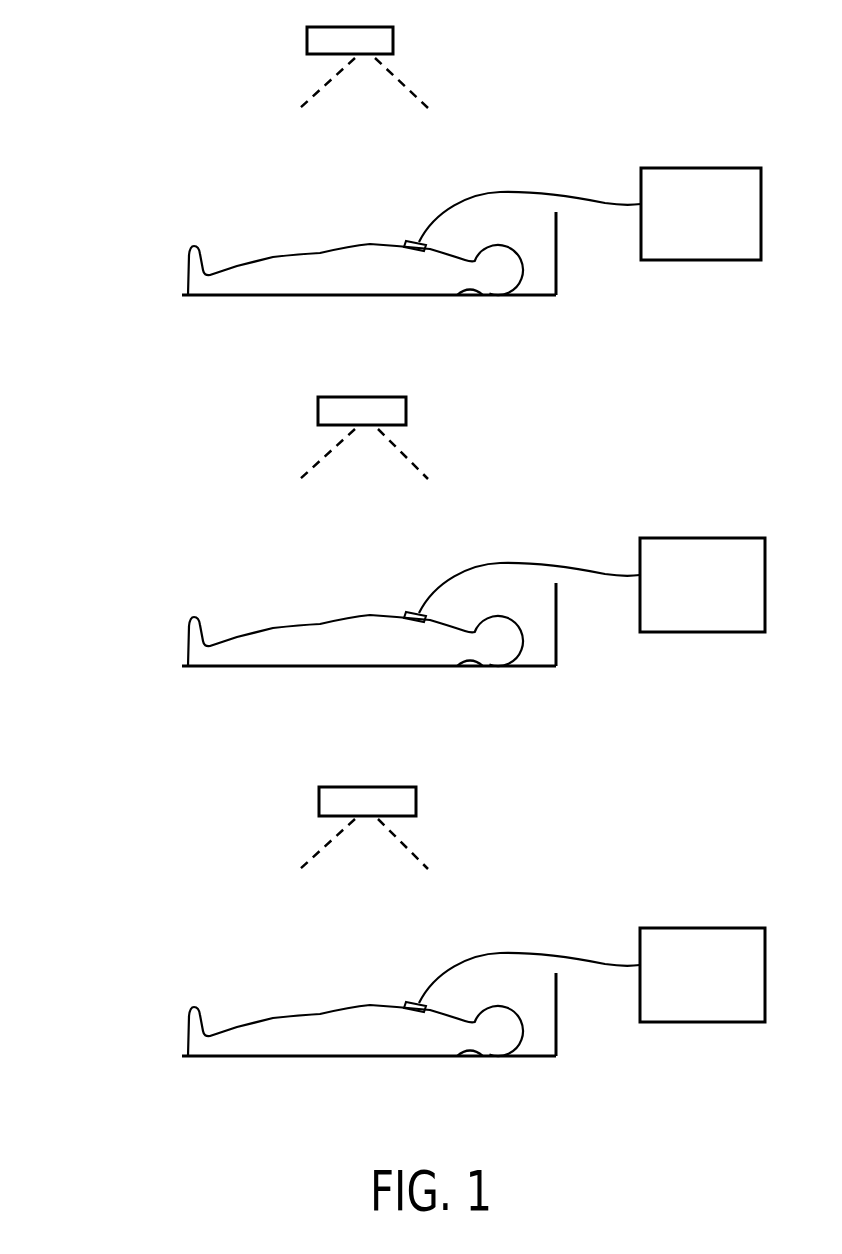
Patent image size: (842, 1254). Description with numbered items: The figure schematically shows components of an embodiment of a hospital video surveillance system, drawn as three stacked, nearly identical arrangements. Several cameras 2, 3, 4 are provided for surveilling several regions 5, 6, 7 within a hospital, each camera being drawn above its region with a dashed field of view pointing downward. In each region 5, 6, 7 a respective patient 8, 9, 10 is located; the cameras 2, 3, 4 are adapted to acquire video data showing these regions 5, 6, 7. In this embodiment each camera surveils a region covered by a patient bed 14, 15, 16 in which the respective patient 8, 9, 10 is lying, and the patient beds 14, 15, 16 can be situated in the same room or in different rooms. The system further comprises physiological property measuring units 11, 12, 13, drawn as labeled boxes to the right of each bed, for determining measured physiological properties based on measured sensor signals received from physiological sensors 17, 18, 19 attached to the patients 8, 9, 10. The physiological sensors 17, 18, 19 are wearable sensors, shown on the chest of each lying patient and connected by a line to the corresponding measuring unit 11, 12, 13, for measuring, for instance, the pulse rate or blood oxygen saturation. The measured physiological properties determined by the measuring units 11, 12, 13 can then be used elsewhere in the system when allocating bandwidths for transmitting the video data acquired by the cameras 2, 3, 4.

The camera 2 is at (393, 37).
The camera 3 is at (389, 436).
The camera 4 is at (392, 826).
The region 5 is at (120, 284).
The region 6 is at (304, 660).
The region 7 is at (304, 1050).
The patient 8 is at (268, 258).
The patient 9 is at (355, 610).
The patient 10 is at (355, 1001).
The physiological property measuring unit 11 is at (714, 168).
The physiological property measuring unit 12 is at (595, 550).
The physiological property measuring unit 13 is at (595, 940).
The patient bed 14 is at (556, 285).
The patient bed 15 is at (601, 630).
The patient bed 16 is at (601, 1020).
The physiological sensor 17 is at (410, 242).
The physiological sensor 18 is at (395, 582).
The physiological sensor 19 is at (395, 972).